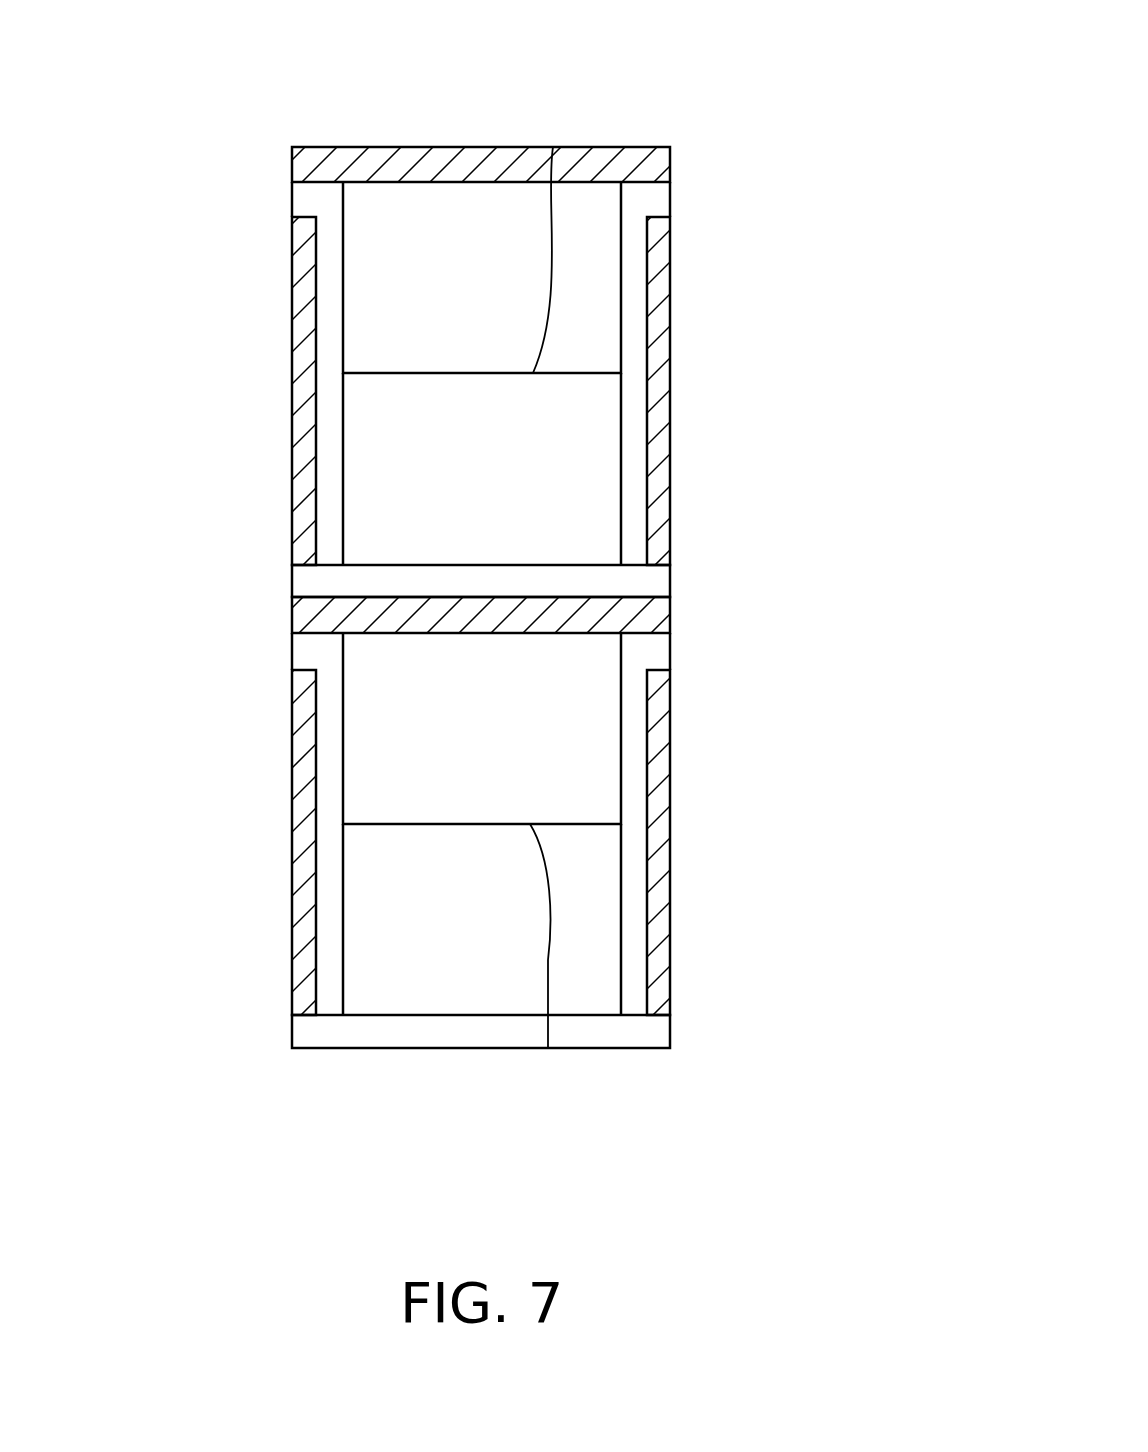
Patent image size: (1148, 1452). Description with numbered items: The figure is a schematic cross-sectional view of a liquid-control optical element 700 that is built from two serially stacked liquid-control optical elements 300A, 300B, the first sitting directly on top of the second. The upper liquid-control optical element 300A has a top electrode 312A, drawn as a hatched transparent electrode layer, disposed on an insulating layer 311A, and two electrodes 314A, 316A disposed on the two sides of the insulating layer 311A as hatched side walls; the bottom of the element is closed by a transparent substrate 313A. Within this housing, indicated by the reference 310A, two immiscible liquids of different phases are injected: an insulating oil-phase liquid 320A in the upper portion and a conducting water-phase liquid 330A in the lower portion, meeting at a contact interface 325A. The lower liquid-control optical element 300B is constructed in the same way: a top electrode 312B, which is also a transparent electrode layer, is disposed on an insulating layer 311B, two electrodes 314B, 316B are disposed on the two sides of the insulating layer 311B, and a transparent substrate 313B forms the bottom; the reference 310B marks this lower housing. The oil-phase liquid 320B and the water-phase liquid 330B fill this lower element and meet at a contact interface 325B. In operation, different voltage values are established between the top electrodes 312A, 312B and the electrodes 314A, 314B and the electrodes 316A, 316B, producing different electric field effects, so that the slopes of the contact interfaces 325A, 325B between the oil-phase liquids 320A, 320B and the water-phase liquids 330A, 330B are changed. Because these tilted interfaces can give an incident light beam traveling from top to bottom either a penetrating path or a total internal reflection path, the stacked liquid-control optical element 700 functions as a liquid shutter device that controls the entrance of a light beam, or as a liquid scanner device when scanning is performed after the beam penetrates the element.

The liquid-control optical element 700 is at (765, 93).
The liquid-control optical element 300A is at (270, 295).
The liquid-control optical element 300B is at (270, 775).
The first housing 310A is at (426, 147).
The second housing 310B is at (423, 1048).
The insulating layer 311A is at (655, 200).
The insulating layer 311B is at (655, 650).
The top electrode 312A is at (340, 167).
The top electrode 312B is at (318, 615).
The transparent substrate 313A is at (642, 580).
The transparent substrate 313B is at (642, 1030).
The electrode 314A is at (302, 523).
The electrode 314B is at (302, 975).
The electrode 316A is at (655, 517).
The electrode 316B is at (655, 968).
The oil-phase liquid 320A is at (424, 229).
The oil-phase liquid 320B is at (424, 674).
The contact interface 325A is at (553, 147).
The contact interface 325B is at (548, 1048).
The water-phase liquid 330A is at (424, 545).
The water-phase liquid 330B is at (425, 998).